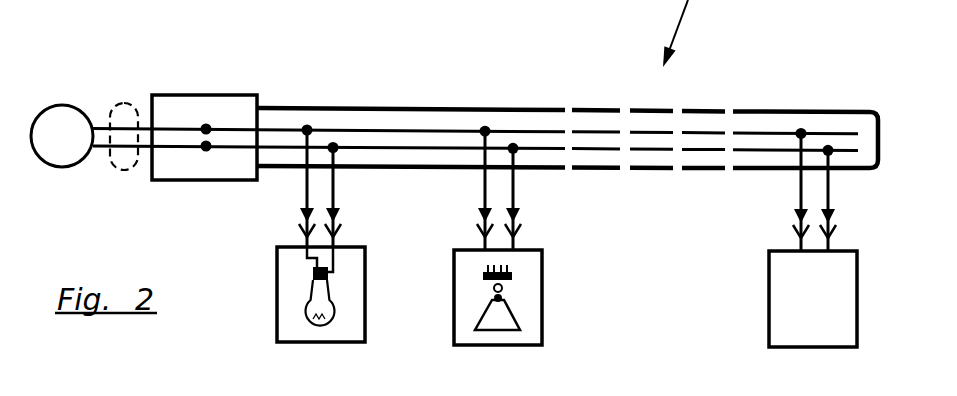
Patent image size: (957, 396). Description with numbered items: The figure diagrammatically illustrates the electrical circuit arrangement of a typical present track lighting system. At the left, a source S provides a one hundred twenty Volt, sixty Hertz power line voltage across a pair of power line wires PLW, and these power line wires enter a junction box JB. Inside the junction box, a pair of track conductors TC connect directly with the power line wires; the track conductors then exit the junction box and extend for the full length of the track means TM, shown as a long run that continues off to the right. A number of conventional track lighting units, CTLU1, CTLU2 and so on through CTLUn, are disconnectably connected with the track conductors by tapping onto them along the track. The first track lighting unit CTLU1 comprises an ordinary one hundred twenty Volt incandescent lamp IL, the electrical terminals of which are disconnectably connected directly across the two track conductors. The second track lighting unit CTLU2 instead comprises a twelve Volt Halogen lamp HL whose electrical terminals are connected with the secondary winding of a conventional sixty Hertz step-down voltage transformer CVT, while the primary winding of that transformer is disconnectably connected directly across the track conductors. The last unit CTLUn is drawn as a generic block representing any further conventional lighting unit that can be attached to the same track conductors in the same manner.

The source S is at (70, 149).
The power line wires PLW is at (128, 170).
The junction box JB is at (186, 92).
The track conductors TC is at (238, 147).
The track means TM is at (474, 103).
The conventional track lighting unit CTLU1 is at (280, 292).
The incandescent lamp IL is at (333, 307).
The step-down voltage transformer CVT is at (512, 278).
The Halogen lamp HL is at (510, 310).
The conventional track lighting unit CTLU2 is at (556, 295).
The conventional track lighting unit CTLUn is at (766, 284).